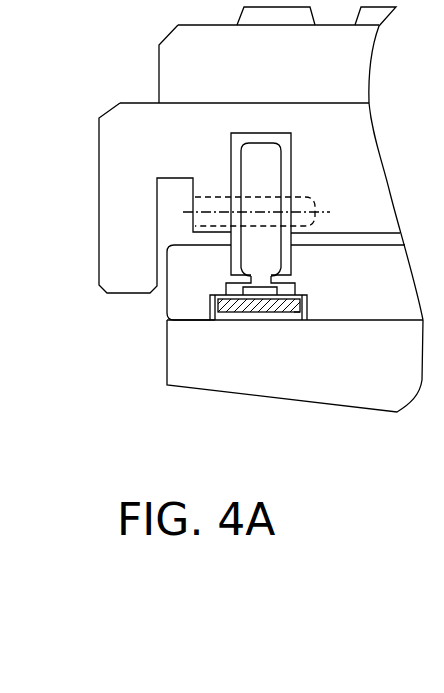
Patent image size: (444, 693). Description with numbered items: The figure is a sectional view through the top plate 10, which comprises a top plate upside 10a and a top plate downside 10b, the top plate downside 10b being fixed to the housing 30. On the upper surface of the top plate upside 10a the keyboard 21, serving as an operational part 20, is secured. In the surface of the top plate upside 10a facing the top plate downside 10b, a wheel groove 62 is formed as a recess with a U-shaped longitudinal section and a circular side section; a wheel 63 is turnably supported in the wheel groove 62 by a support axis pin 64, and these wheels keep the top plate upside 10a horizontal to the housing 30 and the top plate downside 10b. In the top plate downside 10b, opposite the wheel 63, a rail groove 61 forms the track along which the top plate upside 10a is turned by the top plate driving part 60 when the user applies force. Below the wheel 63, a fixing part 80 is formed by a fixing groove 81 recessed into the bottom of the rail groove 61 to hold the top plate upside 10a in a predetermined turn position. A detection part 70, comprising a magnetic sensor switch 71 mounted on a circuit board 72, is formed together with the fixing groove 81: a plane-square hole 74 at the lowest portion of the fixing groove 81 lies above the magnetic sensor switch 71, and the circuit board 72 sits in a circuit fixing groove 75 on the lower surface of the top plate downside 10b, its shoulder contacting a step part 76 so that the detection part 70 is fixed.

The top plate 10 is at (220, 192).
The top plate upside 10a is at (110, 160).
The top plate downside 10b is at (124, 285).
The operational part 20 is at (90, 56).
The keyboard 21 is at (173, 60).
The housing 30 is at (182, 353).
The top plate driving part 60 is at (270, 165).
The rail groove 61 is at (199, 282).
The wheel groove 62 is at (237, 139).
The wheel 63 is at (269, 160).
The support axis pin 64 is at (327, 207).
The detection part 70 is at (249, 388).
The magnetic sensor switch 71 is at (259, 293).
The circuit board 72 is at (294, 312).
The hole 74 is at (292, 276).
The circuit fixing groove 75 is at (226, 313).
The step part 76 is at (214, 320).
The fixing part 80 is at (313, 330).
The fixing groove 81 is at (297, 298).